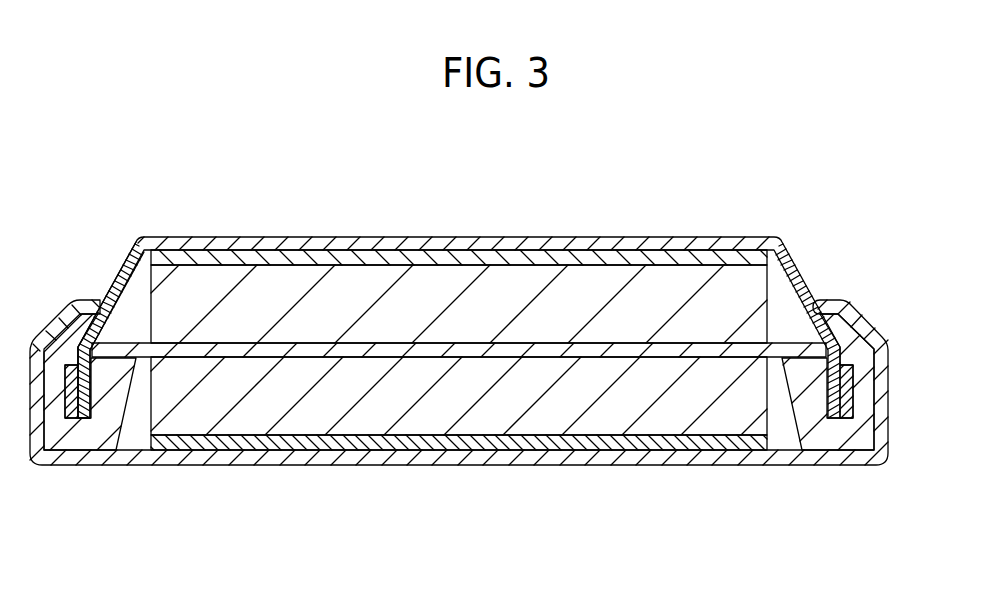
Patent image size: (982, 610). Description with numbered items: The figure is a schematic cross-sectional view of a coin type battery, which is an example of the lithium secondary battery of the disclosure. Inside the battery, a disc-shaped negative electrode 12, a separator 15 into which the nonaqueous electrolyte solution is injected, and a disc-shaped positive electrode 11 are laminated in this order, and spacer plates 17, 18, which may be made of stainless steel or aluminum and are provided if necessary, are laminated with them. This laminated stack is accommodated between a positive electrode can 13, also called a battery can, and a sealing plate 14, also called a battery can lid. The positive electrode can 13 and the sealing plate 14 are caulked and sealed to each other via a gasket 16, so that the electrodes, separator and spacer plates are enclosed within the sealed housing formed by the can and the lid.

The positive electrode 11 is at (483, 393).
The negative electrode 12 is at (233, 289).
The positive electrode can 13 is at (832, 466).
The sealing plate 14 is at (120, 264).
The separator 15 is at (700, 358).
The gasket 16 is at (845, 300).
The spacer plate 17 is at (237, 464).
The spacer plate 18 is at (477, 262).